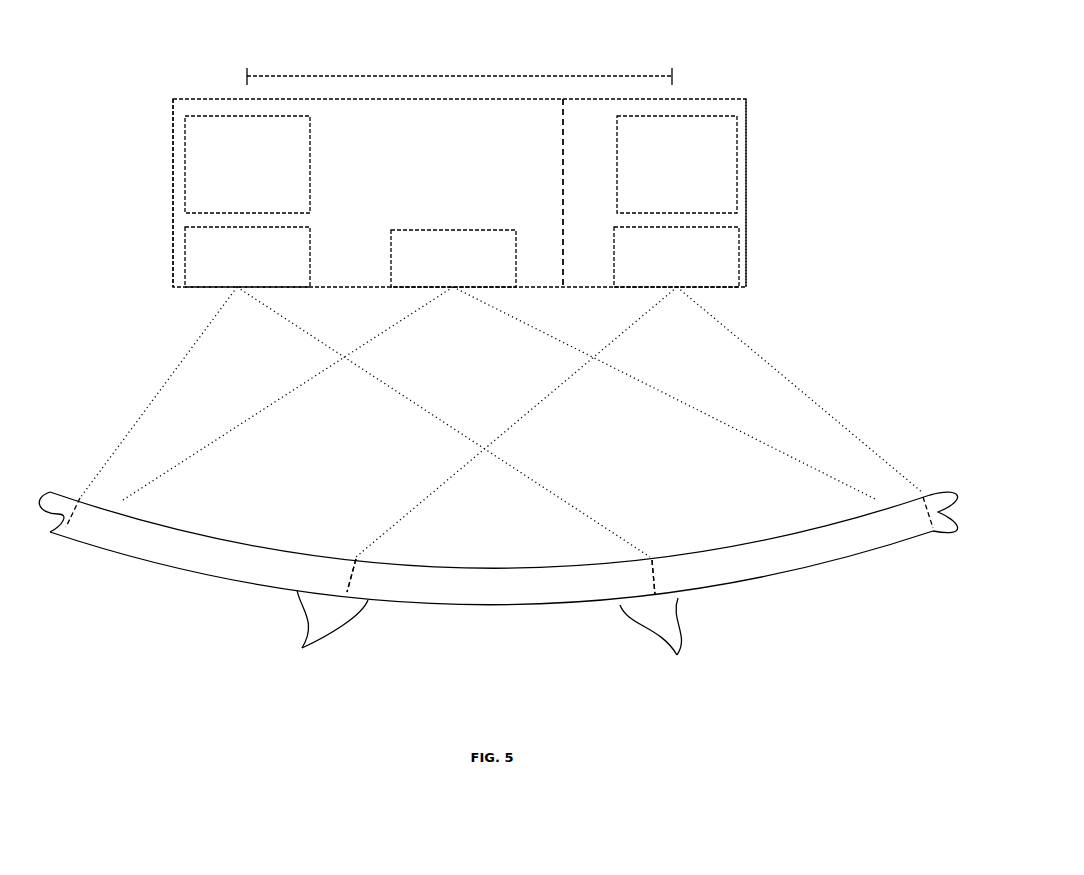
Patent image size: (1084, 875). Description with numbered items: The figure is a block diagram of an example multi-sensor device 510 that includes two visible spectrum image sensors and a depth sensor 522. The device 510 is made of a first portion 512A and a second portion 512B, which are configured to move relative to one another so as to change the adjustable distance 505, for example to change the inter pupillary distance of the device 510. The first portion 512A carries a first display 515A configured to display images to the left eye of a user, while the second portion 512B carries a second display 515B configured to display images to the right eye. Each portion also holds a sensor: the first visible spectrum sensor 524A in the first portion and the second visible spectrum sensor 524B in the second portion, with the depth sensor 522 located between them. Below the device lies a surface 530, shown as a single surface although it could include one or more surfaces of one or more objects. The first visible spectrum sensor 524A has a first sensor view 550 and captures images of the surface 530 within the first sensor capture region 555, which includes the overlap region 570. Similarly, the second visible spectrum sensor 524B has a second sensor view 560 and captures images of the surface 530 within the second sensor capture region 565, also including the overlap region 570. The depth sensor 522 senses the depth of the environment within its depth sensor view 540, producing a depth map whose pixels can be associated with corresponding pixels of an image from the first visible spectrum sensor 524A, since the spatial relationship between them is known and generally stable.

The adjustable distance 505 is at (450, 76).
The multi-sensor device 510 is at (172, 128).
The first portion 512A is at (172, 215).
The second portion 512B is at (746, 175).
The first display 515A is at (247, 164).
The second display 515B is at (677, 164).
The depth sensor 522 is at (453, 258).
The first visible spectrum sensor 524A is at (247, 257).
The second visible spectrum sensor 524B is at (676, 257).
The surface 530 is at (83, 492).
The depth sensor view 540 is at (546, 337).
The first sensor view 550 is at (165, 383).
The first sensor capture region 555 is at (304, 631).
The second sensor view 560 is at (809, 396).
The second sensor capture region 565 is at (675, 636).
The overlap region 570 is at (513, 610).